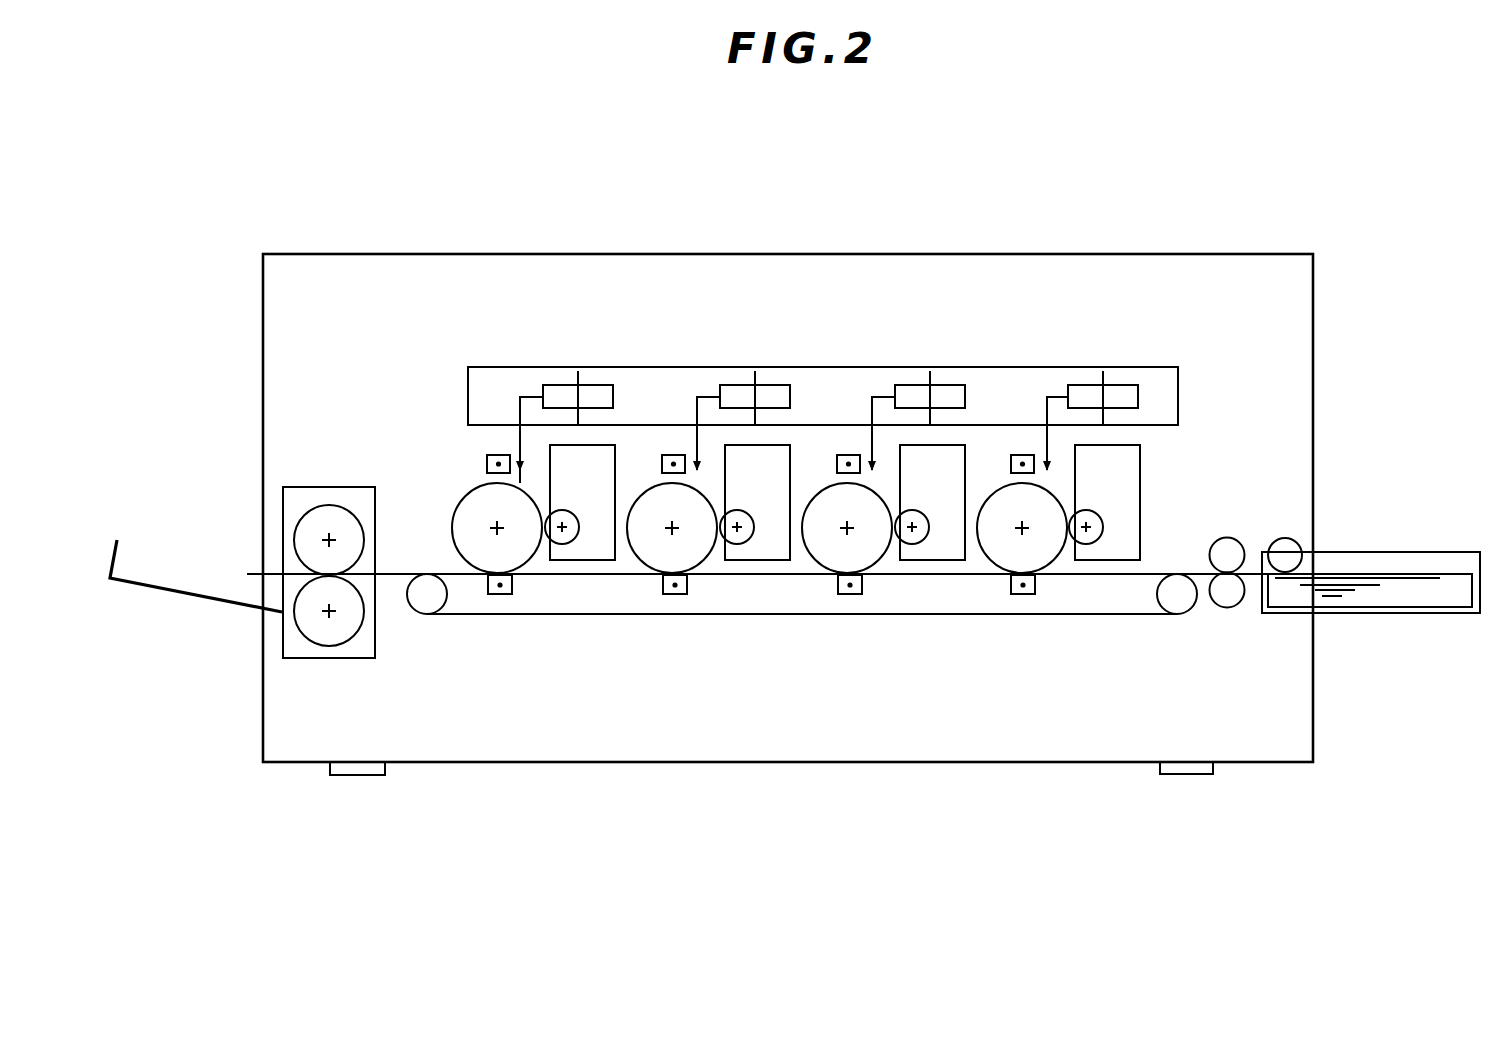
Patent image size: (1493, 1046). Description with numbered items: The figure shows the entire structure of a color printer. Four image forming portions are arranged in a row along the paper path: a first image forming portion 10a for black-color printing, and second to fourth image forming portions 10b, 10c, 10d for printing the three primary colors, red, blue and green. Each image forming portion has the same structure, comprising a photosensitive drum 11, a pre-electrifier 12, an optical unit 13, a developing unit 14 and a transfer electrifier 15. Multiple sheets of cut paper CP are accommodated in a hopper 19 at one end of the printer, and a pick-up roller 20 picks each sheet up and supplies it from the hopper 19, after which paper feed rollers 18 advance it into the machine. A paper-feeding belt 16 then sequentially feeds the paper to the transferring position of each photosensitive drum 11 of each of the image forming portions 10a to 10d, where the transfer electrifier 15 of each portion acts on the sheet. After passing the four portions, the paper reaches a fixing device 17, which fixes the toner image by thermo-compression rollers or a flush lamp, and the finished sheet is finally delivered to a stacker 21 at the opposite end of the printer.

The first image forming portion 10a is at (1011, 602).
The second image forming portion 10b is at (866, 600).
The third image forming portion 10c is at (682, 602).
The fourth image forming portion 10d is at (472, 593).
The photosensitive drum 11 is at (654, 500).
The pre-electrifier 12 is at (1012, 458).
The optical unit 13 is at (1141, 390).
The developing unit 14 is at (755, 450).
The transfer electrifier 15 is at (512, 585).
The paper-feeding belt 16 is at (883, 614).
The fixing device 17 is at (297, 497).
The paper feed rollers 18 is at (1225, 545).
The hopper 19 is at (1388, 609).
The pick-up roller 20 is at (1283, 540).
The stacker 21 is at (157, 595).
The cut paper CP is at (1415, 583).